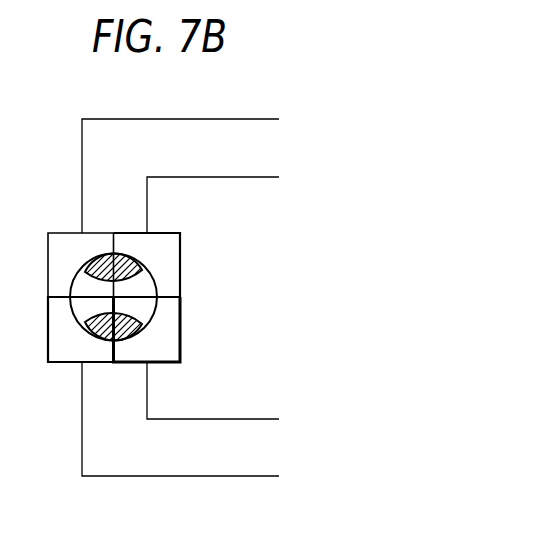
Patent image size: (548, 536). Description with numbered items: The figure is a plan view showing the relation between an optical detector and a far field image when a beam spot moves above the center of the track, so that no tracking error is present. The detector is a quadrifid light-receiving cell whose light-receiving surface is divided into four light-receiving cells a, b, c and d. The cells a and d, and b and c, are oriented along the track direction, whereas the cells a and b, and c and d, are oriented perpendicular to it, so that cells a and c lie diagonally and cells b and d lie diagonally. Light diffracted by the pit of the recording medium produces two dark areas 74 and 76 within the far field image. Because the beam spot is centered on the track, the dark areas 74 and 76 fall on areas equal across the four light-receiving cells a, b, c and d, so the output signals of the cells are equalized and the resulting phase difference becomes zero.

The dark area 74 is at (143, 325).
The dark area 76 is at (143, 270).
The light-receiving cell a is at (69, 265).
The light-receiving cell b is at (159, 265).
The light-receiving cell c is at (158, 329).
The light-receiving cell d is at (69, 329).